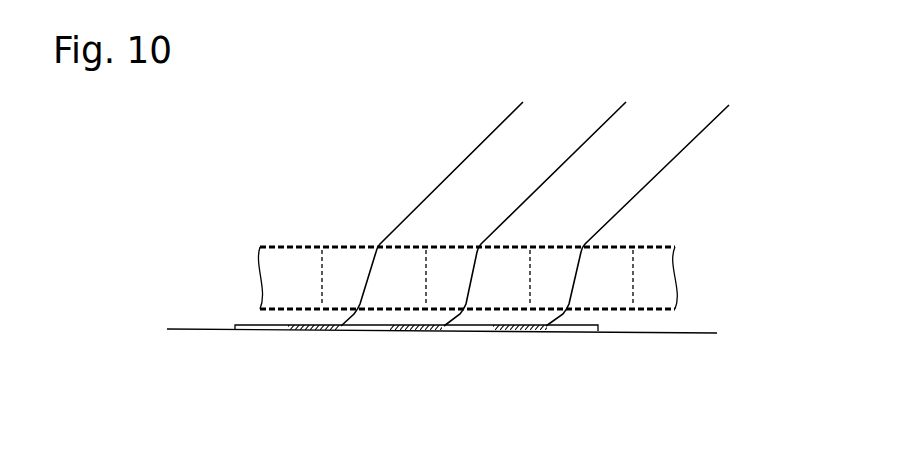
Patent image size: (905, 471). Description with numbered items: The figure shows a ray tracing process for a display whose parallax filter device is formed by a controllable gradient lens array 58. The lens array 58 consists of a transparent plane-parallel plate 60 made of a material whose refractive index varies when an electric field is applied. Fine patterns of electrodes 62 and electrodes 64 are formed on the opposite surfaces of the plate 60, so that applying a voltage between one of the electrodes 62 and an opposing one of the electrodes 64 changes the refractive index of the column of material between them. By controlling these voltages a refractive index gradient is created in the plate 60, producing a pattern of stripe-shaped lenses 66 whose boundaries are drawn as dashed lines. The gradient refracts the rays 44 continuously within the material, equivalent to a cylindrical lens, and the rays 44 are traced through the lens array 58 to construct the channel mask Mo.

The controllable gradient lens array 58 is at (291, 219).
The rays 44 is at (468, 152).
The transparent plane-parallel plate 60 is at (265, 272).
The electrodes 64 is at (675, 249).
The electrodes 62 is at (675, 310).
The stripe-shaped lenses 66 is at (531, 269).
The channel mask Mo is at (412, 332).